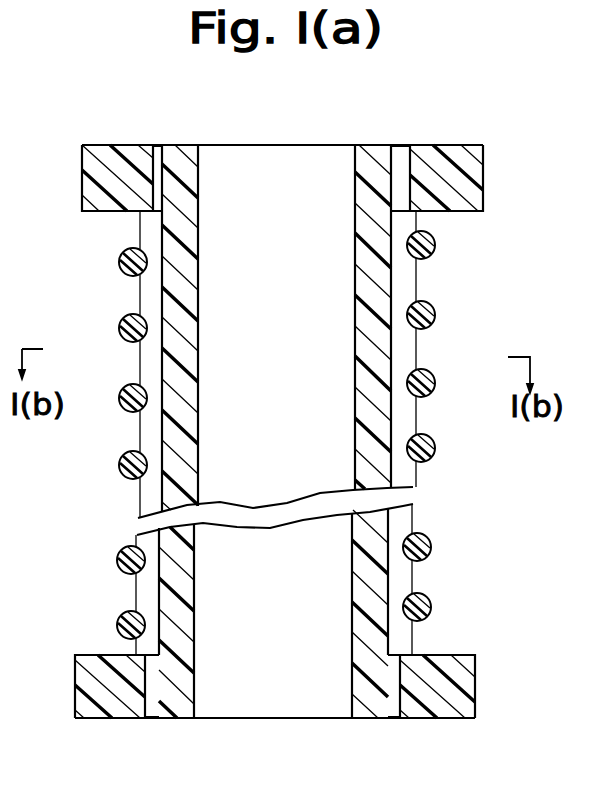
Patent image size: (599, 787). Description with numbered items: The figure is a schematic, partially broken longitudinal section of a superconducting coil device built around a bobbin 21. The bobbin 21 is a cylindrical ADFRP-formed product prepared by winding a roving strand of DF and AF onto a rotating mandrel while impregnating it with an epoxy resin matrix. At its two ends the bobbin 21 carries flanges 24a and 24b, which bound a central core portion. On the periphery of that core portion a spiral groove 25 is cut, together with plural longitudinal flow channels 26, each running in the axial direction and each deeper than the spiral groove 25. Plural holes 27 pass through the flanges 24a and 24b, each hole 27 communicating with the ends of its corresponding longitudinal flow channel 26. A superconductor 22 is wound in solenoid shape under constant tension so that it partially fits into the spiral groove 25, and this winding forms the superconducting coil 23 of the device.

The bobbin 21 is at (374, 158).
The superconductor 22 is at (440, 247).
The superconducting coil 23 is at (440, 548).
The flange 24a is at (483, 180).
The flange 24b is at (475, 686).
The spiral groove 25 is at (410, 537).
The longitudinal flow channel 26 is at (408, 414).
The hole 27 is at (404, 146).